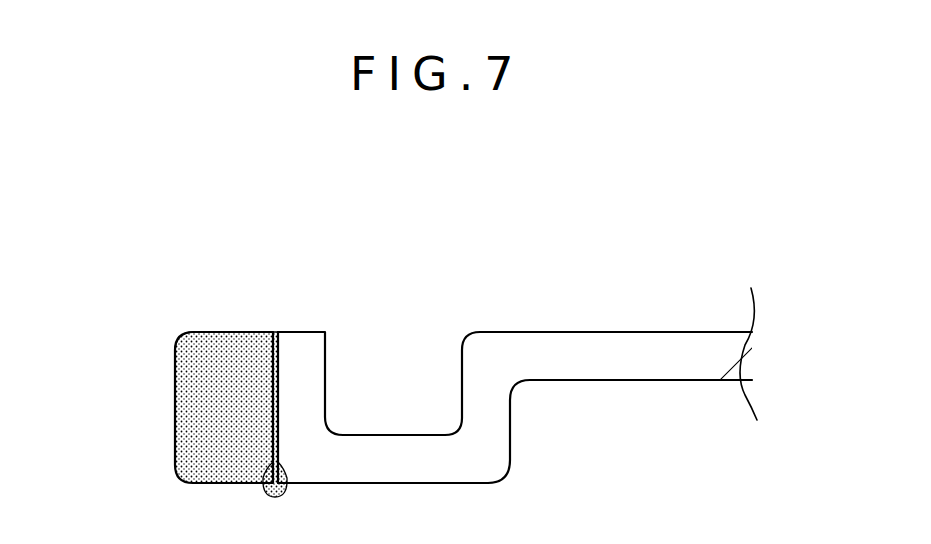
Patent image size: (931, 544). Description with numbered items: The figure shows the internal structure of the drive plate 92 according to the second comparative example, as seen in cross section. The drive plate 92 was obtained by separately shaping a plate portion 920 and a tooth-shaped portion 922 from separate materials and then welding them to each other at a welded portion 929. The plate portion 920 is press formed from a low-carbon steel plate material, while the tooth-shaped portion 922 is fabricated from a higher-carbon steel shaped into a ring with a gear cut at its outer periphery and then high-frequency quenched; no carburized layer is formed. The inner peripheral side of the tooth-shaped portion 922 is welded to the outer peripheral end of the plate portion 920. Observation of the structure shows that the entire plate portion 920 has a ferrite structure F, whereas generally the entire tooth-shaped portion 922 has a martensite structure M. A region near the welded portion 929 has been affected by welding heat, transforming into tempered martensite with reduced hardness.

The drive plate 92 is at (515, 272).
The plate portion 920 is at (574, 336).
The tooth-shaped portion 922 is at (198, 316).
The welded portion 929 is at (278, 356).
The martensite structure M is at (197, 348).
The ferrite structure F is at (637, 380).